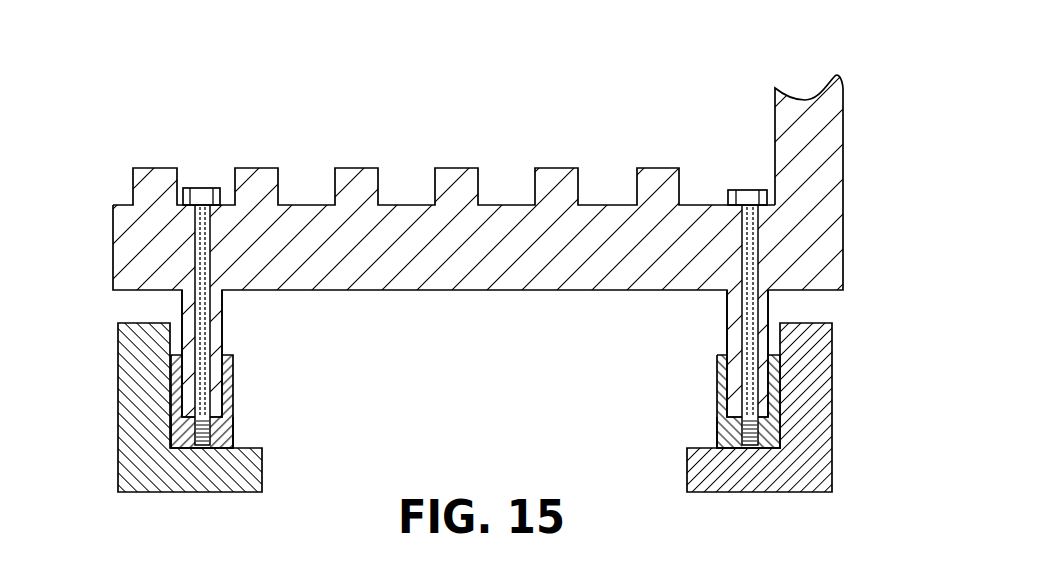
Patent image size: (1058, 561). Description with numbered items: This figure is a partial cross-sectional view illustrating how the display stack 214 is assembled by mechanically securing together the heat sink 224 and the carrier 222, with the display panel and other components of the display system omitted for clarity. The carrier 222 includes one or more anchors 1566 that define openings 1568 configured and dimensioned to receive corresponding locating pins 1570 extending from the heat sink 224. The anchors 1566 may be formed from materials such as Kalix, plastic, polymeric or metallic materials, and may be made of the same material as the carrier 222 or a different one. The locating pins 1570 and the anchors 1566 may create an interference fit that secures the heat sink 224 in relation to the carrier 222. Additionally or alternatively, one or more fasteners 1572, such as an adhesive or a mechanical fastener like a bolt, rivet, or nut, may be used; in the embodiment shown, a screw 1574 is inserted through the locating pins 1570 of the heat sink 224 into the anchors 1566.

The display stack 214 is at (470, 110).
The heat sink 224 is at (314, 186).
The carrier 222 is at (163, 501).
The locating pins 1570 is at (223, 327).
The fasteners 1572 is at (207, 184).
The screw 1574 is at (200, 186).
The openings 1568 is at (234, 396).
The anchors 1566 is at (245, 433).